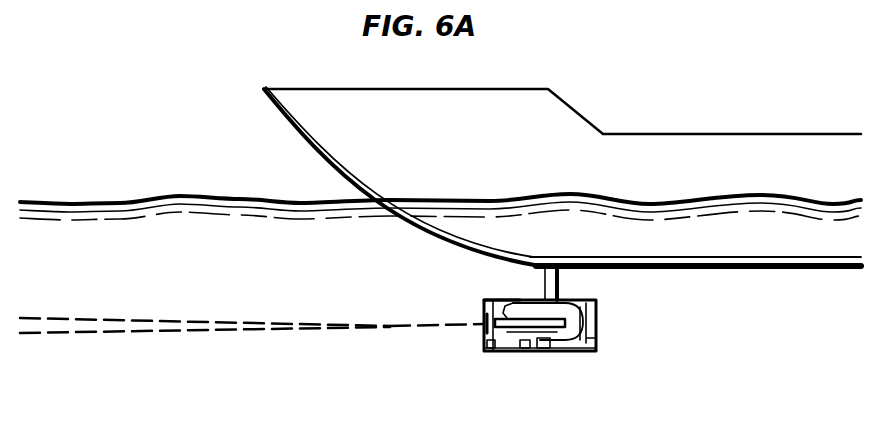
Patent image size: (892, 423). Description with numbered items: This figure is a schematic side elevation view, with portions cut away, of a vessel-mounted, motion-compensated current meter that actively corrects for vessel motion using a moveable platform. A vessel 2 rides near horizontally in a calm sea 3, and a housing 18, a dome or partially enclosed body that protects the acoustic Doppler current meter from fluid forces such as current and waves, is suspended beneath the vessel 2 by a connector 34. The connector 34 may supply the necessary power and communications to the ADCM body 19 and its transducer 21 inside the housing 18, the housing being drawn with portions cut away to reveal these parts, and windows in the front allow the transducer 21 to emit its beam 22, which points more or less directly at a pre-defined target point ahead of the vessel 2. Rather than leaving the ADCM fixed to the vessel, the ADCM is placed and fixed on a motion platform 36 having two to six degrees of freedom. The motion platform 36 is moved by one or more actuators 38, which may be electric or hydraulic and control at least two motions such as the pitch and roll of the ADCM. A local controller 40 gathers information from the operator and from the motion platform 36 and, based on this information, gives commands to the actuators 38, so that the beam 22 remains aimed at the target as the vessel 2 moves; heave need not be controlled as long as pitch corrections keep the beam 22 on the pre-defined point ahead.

The vessel 2 is at (772, 134).
The sea 3 is at (143, 200).
The housing 18 is at (597, 312).
The ADCM body 19 is at (507, 300).
The transducer 21 is at (488, 300).
The beam 22 is at (148, 334).
The connector 34 is at (568, 281).
The motion platform 36 is at (548, 353).
The actuators 38 is at (515, 353).
The local controller 40 is at (482, 355).